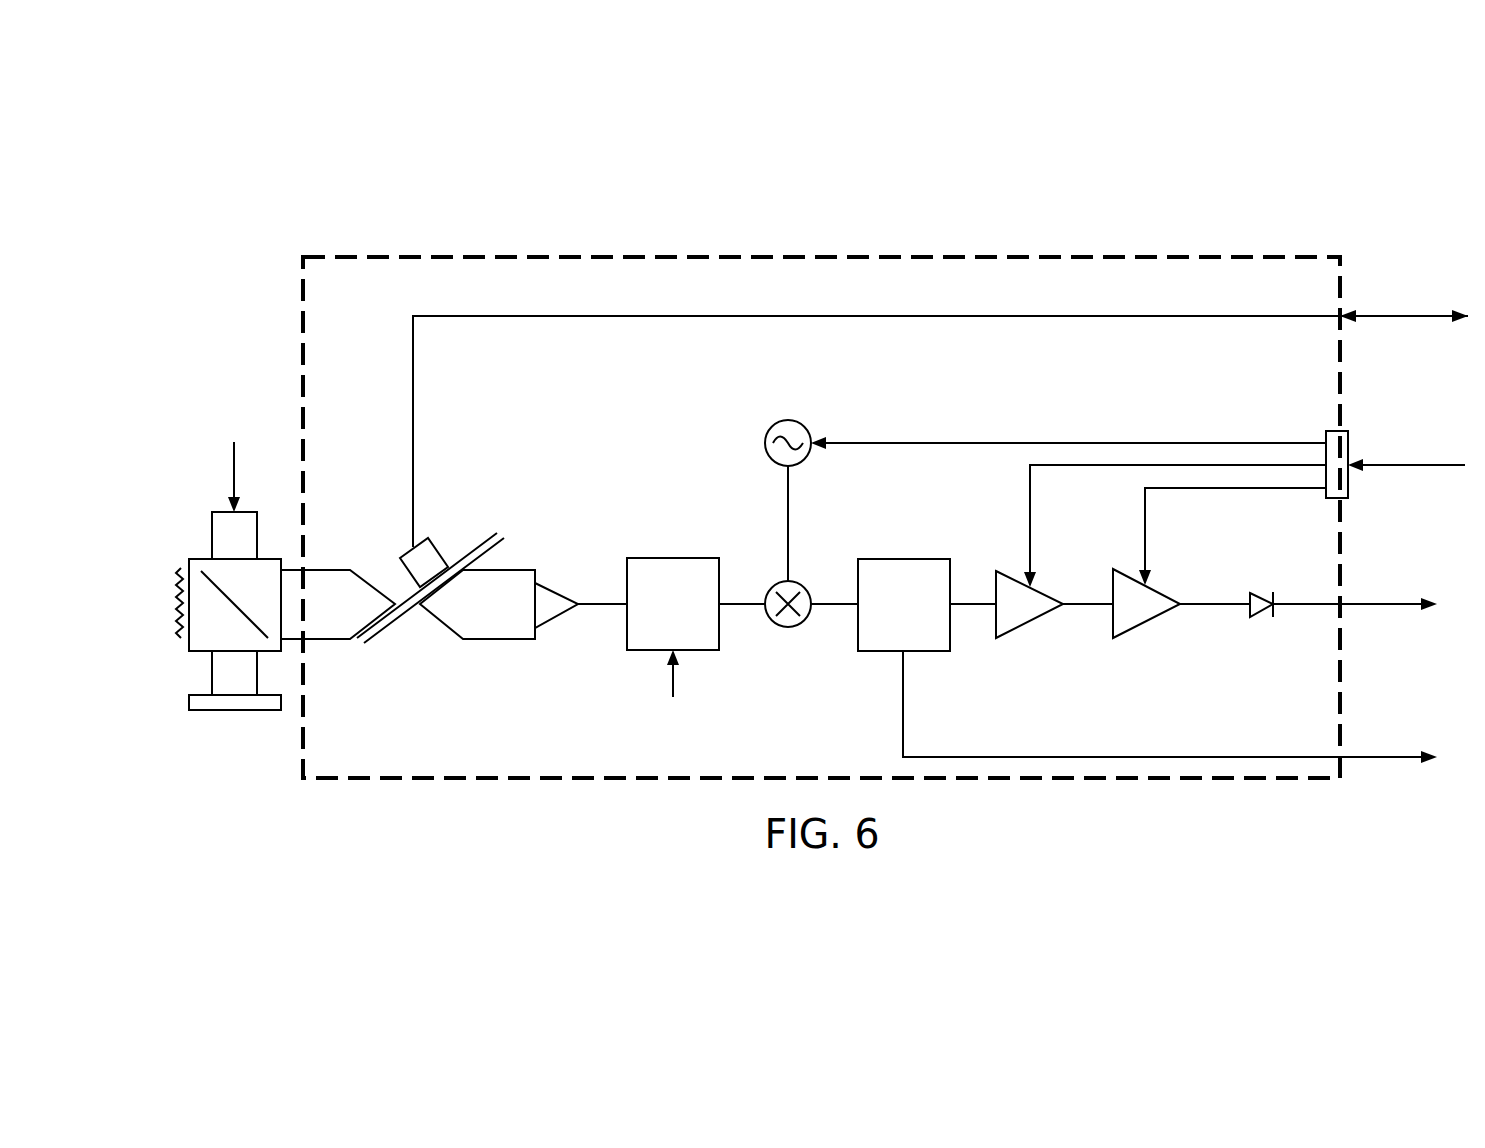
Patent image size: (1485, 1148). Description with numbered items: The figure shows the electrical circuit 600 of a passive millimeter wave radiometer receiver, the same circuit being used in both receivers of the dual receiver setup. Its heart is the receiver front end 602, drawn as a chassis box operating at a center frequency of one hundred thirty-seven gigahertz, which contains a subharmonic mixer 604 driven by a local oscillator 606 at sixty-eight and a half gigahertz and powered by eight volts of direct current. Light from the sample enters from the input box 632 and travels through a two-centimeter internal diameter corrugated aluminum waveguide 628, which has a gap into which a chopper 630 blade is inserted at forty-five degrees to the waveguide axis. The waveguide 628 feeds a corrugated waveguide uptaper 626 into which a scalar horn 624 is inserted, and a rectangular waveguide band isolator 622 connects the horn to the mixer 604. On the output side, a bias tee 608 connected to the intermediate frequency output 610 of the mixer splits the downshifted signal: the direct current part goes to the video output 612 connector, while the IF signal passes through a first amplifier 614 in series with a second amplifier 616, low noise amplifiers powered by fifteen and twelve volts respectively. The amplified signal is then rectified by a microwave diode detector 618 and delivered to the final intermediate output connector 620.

The circuit 600 is at (312, 205).
The receiver front end 602 is at (527, 250).
The subharmonic mixer 604 is at (800, 628).
The local oscillator 606 is at (770, 427).
The bias tee 608 is at (915, 558).
The intermediate frequency (IF) output 610 is at (837, 603).
The video output connector 612 is at (1392, 780).
The first amplifier 614 is at (1023, 630).
The second amplifier 616 is at (1163, 617).
The microwave diode detector 618 is at (1260, 598).
The final intermediate output connector 620 is at (1392, 622).
The rectangular waveguide band isolator 622 is at (663, 558).
The scalar horn 624 is at (563, 587).
The corrugated waveguide uptaper 626 is at (500, 640).
The corrugated aluminum waveguide 628 is at (327, 641).
The chopper 630 is at (443, 550).
The input box 632 is at (201, 557).